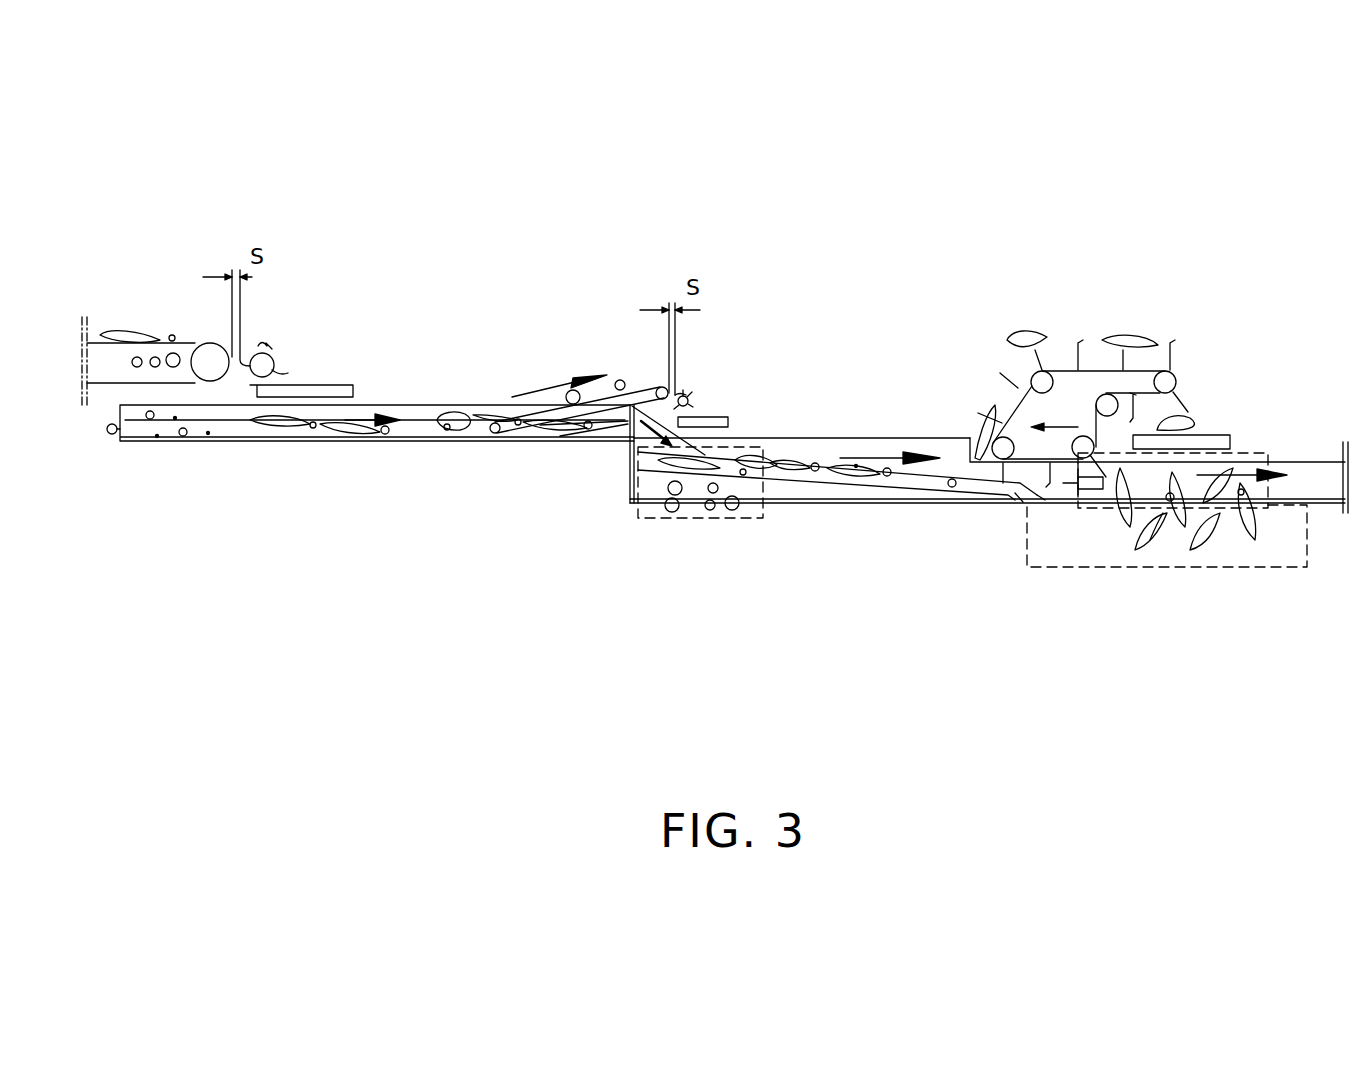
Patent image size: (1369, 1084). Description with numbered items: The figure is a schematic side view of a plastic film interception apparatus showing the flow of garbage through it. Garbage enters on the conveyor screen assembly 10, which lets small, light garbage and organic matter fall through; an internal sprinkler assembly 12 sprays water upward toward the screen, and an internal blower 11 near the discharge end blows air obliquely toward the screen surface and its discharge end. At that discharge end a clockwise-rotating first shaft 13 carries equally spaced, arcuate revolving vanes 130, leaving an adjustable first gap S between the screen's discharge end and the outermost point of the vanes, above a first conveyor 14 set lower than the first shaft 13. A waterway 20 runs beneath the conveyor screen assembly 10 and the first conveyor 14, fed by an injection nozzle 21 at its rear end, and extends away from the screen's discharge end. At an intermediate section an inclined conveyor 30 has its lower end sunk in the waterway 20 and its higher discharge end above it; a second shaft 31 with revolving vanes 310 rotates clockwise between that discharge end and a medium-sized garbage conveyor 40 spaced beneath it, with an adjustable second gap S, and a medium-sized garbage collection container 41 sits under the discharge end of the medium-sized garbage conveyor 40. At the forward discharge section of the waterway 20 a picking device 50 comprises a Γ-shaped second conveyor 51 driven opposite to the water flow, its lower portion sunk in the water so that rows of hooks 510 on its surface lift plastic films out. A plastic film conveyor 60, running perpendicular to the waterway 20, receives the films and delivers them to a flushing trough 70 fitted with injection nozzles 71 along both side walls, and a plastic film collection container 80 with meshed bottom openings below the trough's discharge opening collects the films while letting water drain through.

The conveyor screen assembly 10 is at (95, 340).
The internal blower 11 is at (180, 363).
The internal sprinkler assembly 12 is at (133, 362).
The first shaft 13 is at (257, 357).
The revolving vanes 130 is at (287, 373).
The first conveyor 14 is at (330, 390).
The waterway 20 is at (406, 398).
The injection nozzle 21 is at (113, 434).
The inclined conveyor 30 is at (635, 386).
The second shaft 31 is at (685, 397).
The revolving vanes 310 is at (690, 403).
The medium-sized garbage conveyor 40 is at (702, 422).
The medium-sized garbage collection container 41 is at (676, 522).
The picking device 50 is at (1097, 302).
The second conveyor 51 is at (1147, 367).
The hooks 510 is at (1075, 355).
The plastic film conveyor 60 is at (1222, 438).
The flushing trough 70 is at (1290, 450).
The injection nozzles 71 is at (1057, 495).
The plastic film collection container 80 is at (1045, 557).